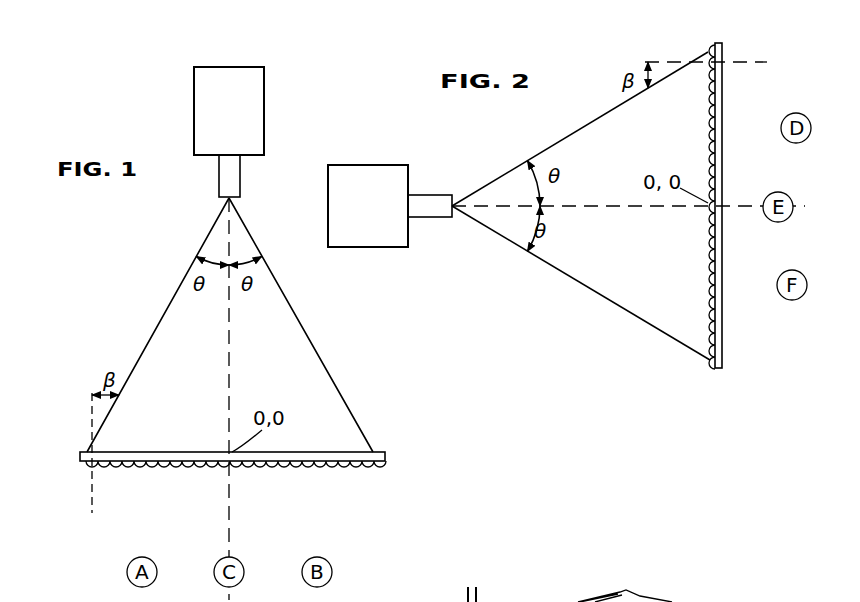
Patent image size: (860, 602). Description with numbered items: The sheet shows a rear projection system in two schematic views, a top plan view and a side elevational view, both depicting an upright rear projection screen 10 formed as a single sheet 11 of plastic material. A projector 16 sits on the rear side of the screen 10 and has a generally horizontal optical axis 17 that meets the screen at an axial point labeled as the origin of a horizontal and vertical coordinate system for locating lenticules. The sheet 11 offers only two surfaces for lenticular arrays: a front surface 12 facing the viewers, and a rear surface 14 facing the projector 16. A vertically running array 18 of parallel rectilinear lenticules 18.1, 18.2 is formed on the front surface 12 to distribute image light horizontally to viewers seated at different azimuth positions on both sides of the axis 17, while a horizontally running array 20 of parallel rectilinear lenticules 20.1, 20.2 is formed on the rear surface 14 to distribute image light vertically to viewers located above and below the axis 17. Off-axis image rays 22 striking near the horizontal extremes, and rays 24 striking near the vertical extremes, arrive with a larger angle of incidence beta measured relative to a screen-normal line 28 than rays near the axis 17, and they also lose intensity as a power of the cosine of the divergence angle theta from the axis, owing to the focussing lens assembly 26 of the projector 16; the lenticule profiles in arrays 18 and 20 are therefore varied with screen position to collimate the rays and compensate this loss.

In FIG. 1, the rear projection screen 10 is at (81, 440).
In FIG. 2, the rear projection screen 10 is at (583, 82).
In FIG. 1, the sheet 11 is at (390, 461).
In FIG. 2, the sheet 11 is at (714, 372).
In FIG. 1, the front surface 12 is at (318, 470).
In FIG. 2, the front surface 12 is at (724, 337).
In FIG. 1, the rear surface 14 is at (343, 462).
In FIG. 2, the rear surface 14 is at (706, 322).
In FIG. 1, the projector 16 is at (194, 96).
In FIG. 2, the projector 16 is at (350, 165).
In FIG. 1, the optical axis 17 is at (231, 372).
In FIG. 1, the vertically running array of lenticules 18 is at (103, 497).
In FIG. 2, the vertically running array of lenticules 18 is at (722, 283).
In FIG. 1, the lenticule 18.1 is at (85, 466).
In FIG. 1, the lenticule 18.2 is at (95, 466).
In FIG. 1, the horizontally running array of lenticules 20 is at (182, 452).
In FIG. 2, the horizontally running array of lenticules 20 is at (708, 268).
In FIG. 2, the lenticule 20.1 is at (706, 48).
In FIG. 2, the lenticule 20.2 is at (706, 56).
In FIG. 1, the image ray 22 is at (167, 307).
In FIG. 2, the image ray 24 is at (590, 294).
In FIG. 1, the focussing lens assembly 26 is at (219, 173).
In FIG. 2, the focussing lens assembly 26 is at (432, 195).
In FIG. 1, the screen-normal line 28 is at (90, 394).
In FIG. 2, the screen-normal line 28 is at (760, 62).